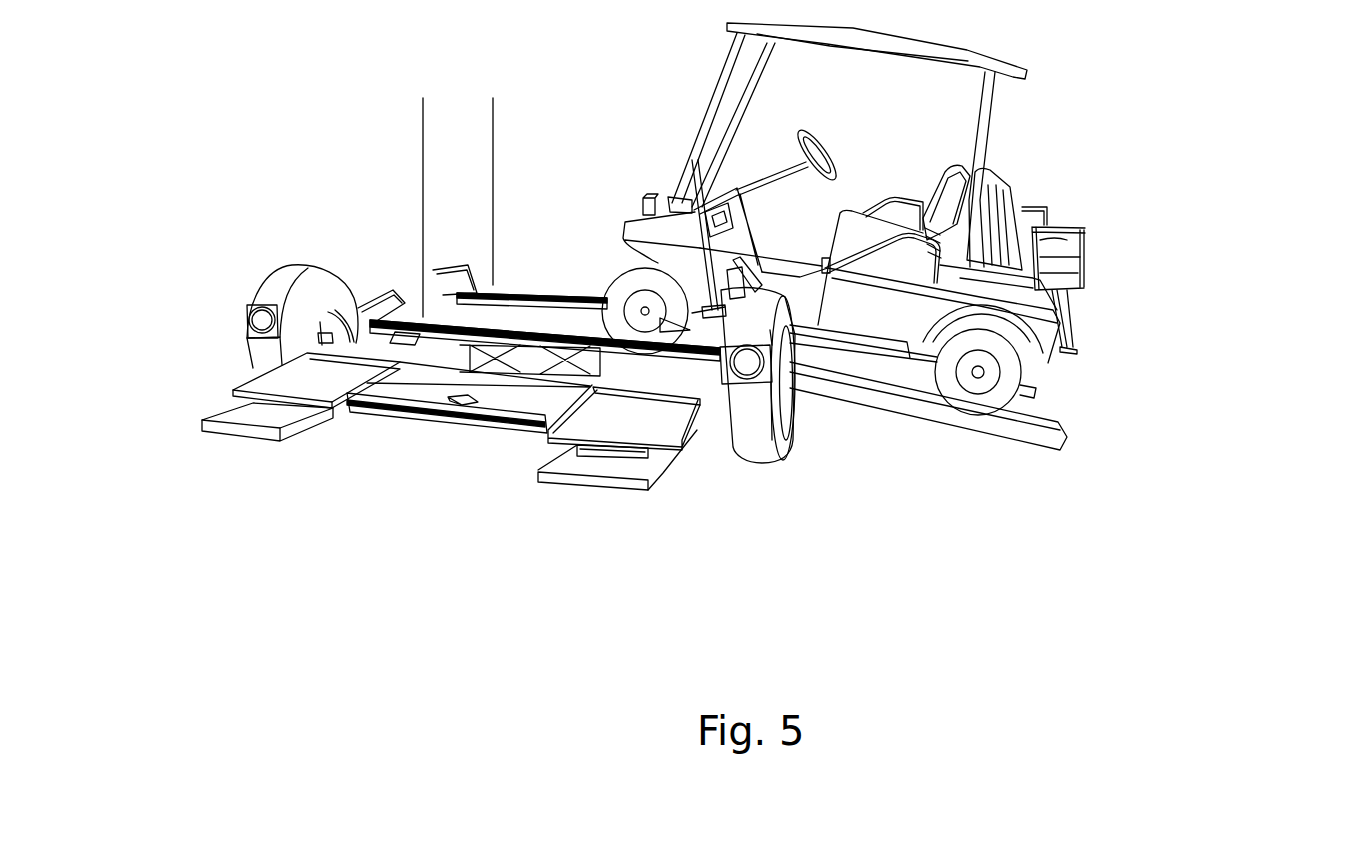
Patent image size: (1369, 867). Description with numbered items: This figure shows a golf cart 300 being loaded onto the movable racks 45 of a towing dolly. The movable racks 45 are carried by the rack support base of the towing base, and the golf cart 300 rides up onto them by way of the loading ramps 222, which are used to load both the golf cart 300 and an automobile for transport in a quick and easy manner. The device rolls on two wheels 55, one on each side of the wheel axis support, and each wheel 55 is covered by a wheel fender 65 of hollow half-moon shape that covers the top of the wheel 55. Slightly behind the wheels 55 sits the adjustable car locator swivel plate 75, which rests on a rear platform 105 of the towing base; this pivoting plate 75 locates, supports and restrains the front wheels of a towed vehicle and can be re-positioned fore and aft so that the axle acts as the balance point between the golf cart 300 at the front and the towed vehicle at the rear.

The movable racks 45 is at (493, 98).
The wheels 55 is at (257, 353).
The wheel fender 65 is at (262, 319).
The adjustable car locator swivel plate 75 is at (295, 388).
The rear platforms 105 is at (250, 442).
The loading ramps 222 is at (987, 427).
The golf cart 300 is at (993, 140).